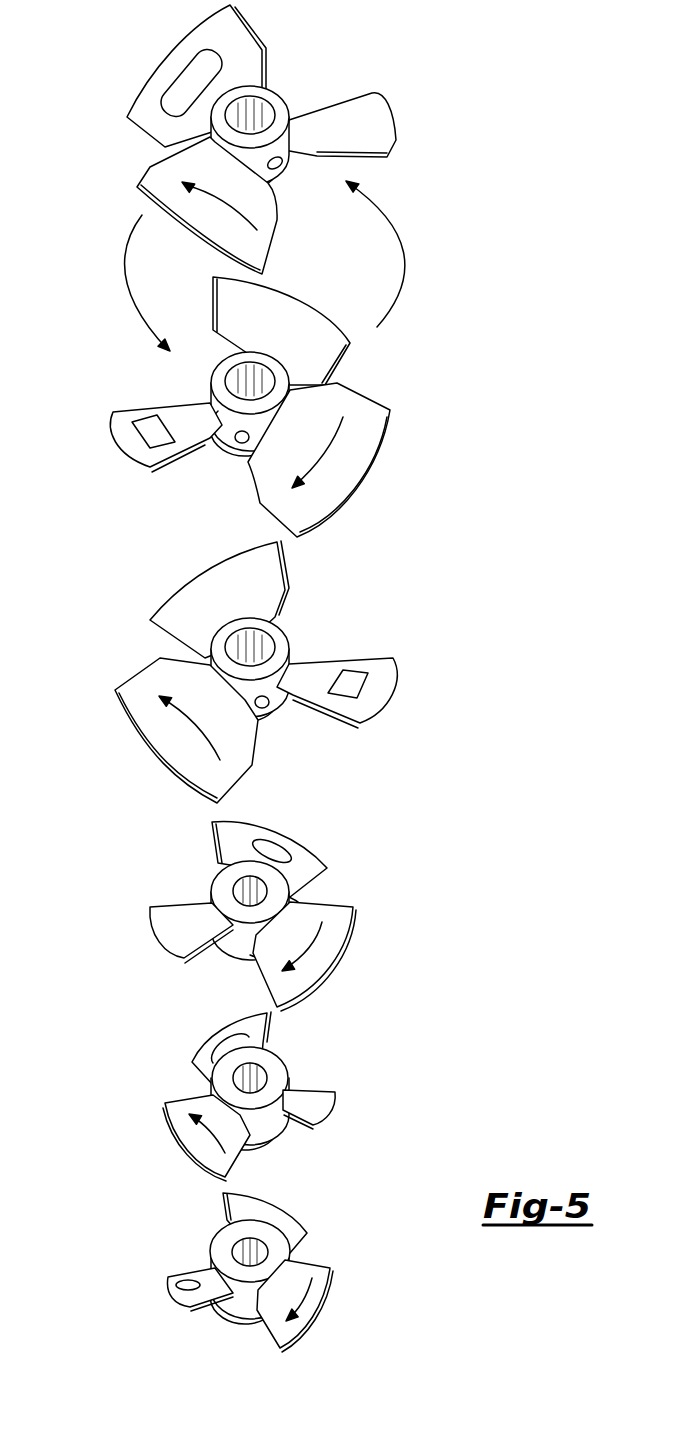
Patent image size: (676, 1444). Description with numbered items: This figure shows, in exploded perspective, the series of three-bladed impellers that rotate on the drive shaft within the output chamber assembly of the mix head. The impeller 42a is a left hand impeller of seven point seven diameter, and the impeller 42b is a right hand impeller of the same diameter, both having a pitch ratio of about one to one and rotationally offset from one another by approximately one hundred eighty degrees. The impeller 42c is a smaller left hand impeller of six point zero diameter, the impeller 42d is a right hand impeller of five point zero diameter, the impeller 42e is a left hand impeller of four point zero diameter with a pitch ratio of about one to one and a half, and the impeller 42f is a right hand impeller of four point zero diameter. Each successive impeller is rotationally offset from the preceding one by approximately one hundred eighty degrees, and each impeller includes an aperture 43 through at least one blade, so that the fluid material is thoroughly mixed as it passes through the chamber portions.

The impeller 42a is at (157, 177).
The impeller 42b is at (157, 470).
The impeller 42c is at (137, 733).
The impeller 42d is at (165, 925).
The impeller 42e is at (180, 1115).
The impeller 42f is at (320, 1278).
The aperture 43 is at (177, 70).